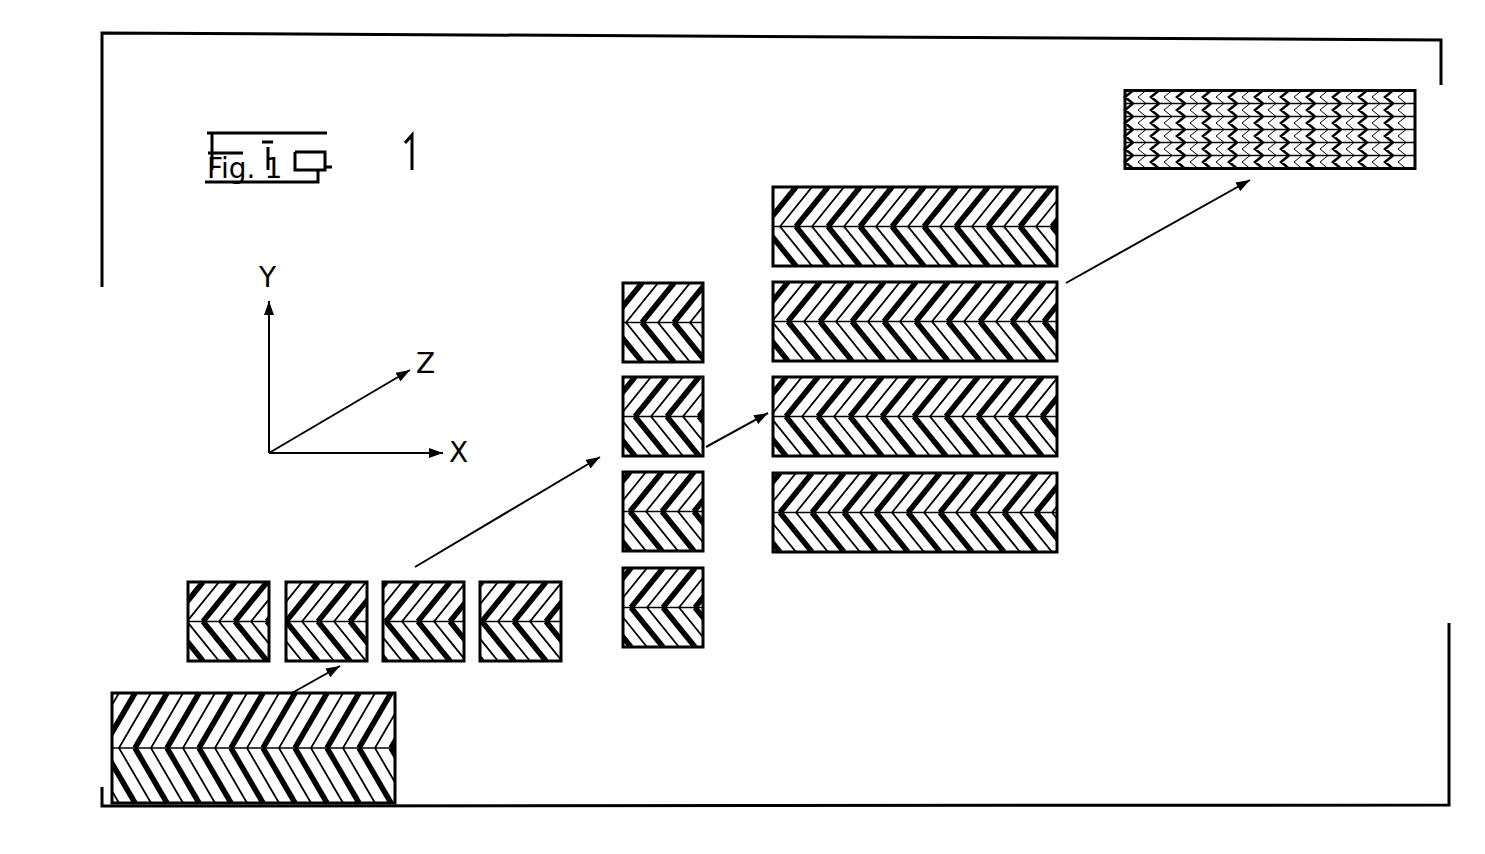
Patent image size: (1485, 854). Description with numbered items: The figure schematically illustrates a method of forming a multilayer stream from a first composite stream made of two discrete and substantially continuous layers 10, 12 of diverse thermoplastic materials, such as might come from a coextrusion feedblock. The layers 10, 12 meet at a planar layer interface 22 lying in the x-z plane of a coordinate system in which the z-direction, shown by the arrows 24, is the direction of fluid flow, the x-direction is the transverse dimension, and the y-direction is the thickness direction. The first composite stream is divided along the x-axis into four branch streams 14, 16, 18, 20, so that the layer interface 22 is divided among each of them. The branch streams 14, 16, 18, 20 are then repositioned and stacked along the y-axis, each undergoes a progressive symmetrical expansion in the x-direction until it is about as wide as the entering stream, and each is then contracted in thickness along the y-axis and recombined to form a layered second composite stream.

The first layer 10 is at (190, 606).
The second layer 12 is at (190, 642).
The first branch stream 14 is at (205, 570).
The second branch stream 16 is at (305, 577).
The third branch stream 18 is at (398, 577).
The fourth branch stream 20 is at (550, 680).
The planar layer interface 22 is at (358, 742).
The arrows 24 is at (292, 690).